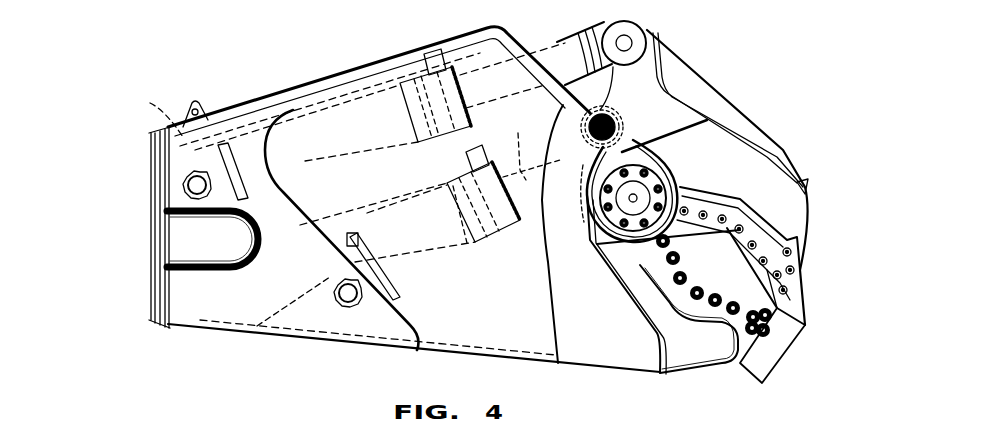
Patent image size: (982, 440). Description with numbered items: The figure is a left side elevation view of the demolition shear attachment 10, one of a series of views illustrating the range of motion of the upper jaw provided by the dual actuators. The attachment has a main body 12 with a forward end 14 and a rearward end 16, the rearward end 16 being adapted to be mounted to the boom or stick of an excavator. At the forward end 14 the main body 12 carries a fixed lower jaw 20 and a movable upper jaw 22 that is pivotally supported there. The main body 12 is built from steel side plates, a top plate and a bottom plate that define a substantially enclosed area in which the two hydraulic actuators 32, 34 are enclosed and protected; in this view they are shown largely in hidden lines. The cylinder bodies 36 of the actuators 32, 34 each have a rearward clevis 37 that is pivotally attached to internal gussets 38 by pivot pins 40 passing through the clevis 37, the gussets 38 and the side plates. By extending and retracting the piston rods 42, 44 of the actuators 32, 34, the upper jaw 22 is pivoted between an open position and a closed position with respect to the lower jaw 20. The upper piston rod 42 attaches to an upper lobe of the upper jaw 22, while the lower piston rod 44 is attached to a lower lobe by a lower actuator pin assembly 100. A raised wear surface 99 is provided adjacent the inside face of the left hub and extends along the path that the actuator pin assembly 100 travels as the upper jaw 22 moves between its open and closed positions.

The demolition shear attachment 10 is at (157, 63).
The main body 12 is at (315, 73).
The forward end 14 is at (813, 272).
The rearward end 16 is at (100, 250).
The fixed lower jaw 20 is at (790, 370).
The movable upper jaw 22 is at (790, 145).
The hydraulic actuator 32 is at (300, 168).
The hydraulic actuator 34 is at (457, 252).
The cylinder body 36 is at (345, 150).
The rearward clevis 37 is at (190, 175).
The internal gusset 38 is at (183, 137).
The pivot pin 40 is at (187, 185).
The upper piston rod 42 is at (555, 53).
The lower piston rod 44 is at (531, 145).
The raised wear surface 99 is at (553, 225).
The lower actuator pin assembly 100 is at (618, 112).